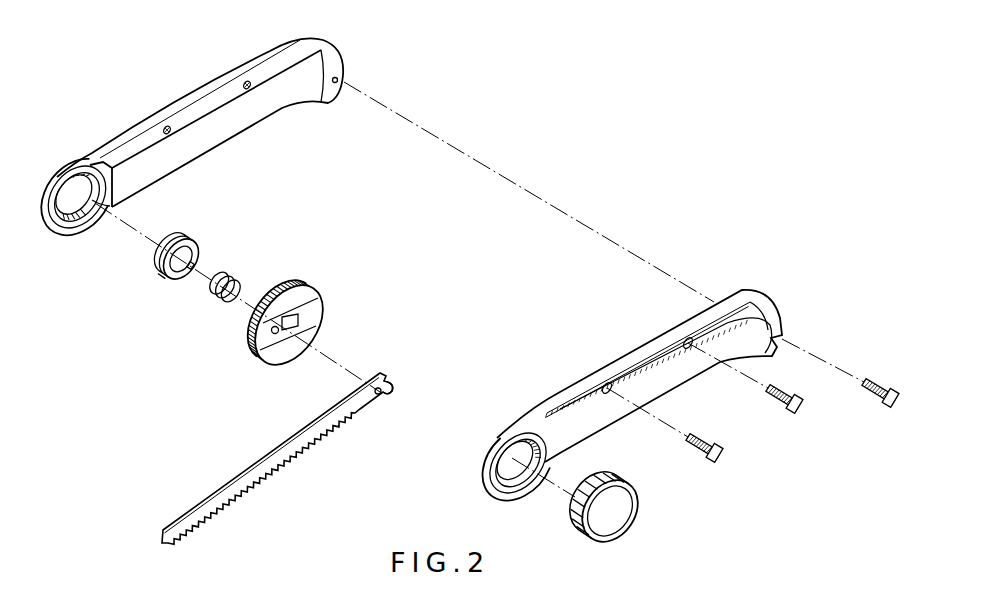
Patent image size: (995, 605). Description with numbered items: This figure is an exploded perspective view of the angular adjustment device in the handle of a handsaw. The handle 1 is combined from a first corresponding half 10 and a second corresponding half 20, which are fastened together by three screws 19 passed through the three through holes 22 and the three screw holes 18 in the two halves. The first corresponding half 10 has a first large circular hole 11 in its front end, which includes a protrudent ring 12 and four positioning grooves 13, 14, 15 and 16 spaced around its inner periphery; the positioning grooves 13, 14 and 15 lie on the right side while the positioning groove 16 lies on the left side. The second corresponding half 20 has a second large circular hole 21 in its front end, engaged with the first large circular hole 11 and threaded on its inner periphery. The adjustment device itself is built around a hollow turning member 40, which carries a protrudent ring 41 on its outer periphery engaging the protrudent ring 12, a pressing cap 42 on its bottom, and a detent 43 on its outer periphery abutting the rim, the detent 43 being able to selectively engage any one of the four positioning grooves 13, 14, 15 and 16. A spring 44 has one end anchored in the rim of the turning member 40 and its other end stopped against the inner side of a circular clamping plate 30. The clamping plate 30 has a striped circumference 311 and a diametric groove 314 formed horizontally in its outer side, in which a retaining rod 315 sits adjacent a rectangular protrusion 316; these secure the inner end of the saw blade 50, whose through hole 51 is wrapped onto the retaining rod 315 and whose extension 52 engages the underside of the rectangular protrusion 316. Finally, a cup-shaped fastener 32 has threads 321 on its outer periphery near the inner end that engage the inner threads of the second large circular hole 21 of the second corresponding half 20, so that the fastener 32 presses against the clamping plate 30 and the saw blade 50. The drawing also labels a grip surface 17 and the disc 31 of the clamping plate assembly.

The handle 1 is at (688, 147).
The first corresponding half 10 is at (120, 138).
The first large circular hole 11 is at (65, 218).
The protrudent ring 12 is at (72, 222).
The positioning groove 13 is at (89, 178).
The positioning groove 14 is at (93, 188).
The positioning groove 15 is at (86, 214).
The positioning groove 16 is at (72, 197).
The grip surface 17 is at (240, 125).
The screw holes 18 is at (167, 126).
The screws 19 is at (727, 462).
The second corresponding half 20 is at (743, 298).
The second large circular hole 21 is at (521, 447).
The through holes 22 is at (608, 383).
The circular clamping plate 30 is at (350, 283).
The positioning disc 31 is at (270, 352).
The striped circumference 311 is at (287, 285).
The diametric groove 314 is at (313, 307).
The retaining rod 315 is at (277, 334).
The rectangular protrusion 316 is at (300, 327).
The cup-shaped fastener 32 is at (613, 520).
The threads 321 is at (572, 513).
The hollow turning member 40 is at (150, 288).
The protrudent ring 41 is at (180, 252).
The pressing cap 42 is at (153, 262).
The detent 43 is at (197, 251).
The spring 44 is at (222, 297).
The saw blade 50 is at (283, 453).
The through hole 51 is at (378, 395).
The extension 52 is at (394, 388).